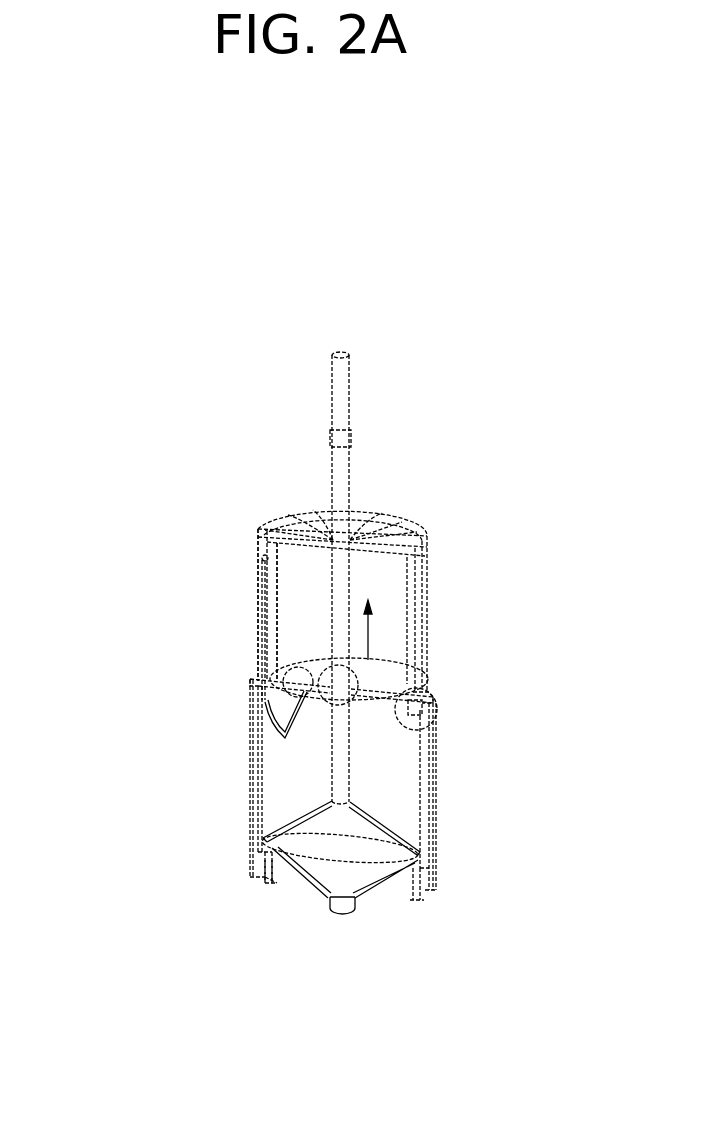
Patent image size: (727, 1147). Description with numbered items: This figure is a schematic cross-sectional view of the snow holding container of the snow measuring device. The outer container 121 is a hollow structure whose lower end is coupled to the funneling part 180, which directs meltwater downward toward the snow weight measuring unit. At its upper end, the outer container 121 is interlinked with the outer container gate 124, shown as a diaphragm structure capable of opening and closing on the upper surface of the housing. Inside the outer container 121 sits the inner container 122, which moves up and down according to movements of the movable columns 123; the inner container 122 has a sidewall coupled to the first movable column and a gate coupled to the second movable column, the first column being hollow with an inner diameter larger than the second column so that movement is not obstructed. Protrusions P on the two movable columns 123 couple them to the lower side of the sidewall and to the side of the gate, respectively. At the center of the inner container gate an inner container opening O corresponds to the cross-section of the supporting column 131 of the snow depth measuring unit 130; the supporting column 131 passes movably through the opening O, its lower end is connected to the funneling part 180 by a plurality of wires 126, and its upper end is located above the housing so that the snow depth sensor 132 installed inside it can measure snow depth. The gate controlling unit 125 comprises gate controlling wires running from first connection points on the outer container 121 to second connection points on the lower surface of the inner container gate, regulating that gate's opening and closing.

The outer container 121 is at (423, 598).
The inner container 122 is at (143, 250).
The movable columns 123 is at (90, 1005).
The outer container gate 124 is at (423, 540).
The gate controlling unit 125 is at (140, 580).
The wires 126 is at (314, 812).
The snow depth measuring unit 130 is at (470, 343).
The supporting column 131 is at (343, 390).
The snow depth sensor 132 is at (343, 440).
The funneling part 180 is at (375, 893).
The protrusions P is at (372, 683).
The inner container opening O is at (440, 703).